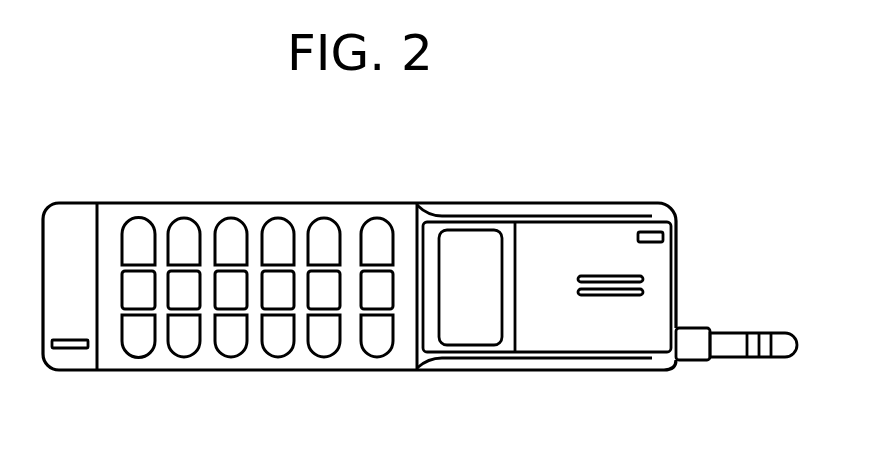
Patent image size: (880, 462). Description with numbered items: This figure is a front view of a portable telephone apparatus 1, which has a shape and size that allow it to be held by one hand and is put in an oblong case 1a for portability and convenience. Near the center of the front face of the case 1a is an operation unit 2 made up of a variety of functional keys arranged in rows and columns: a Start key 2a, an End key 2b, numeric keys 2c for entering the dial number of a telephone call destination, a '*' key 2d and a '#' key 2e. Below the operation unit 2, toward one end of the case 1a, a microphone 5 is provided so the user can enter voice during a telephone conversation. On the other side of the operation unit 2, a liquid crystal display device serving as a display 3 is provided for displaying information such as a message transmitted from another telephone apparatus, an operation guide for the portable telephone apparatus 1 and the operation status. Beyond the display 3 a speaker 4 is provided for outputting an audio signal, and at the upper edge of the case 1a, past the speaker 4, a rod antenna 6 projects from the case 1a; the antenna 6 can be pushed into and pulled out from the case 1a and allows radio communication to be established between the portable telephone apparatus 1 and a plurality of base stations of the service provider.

The portable telephone apparatus 1 is at (398, 384).
The oblong case 1a is at (250, 360).
The operation unit 2 is at (259, 284).
The Start key 2a is at (377, 218).
The End key 2b is at (367, 342).
The numeric keys 2c is at (320, 218).
The '*' key 2d is at (178, 218).
The '#' key 2e is at (186, 352).
The display 3 is at (480, 333).
The speaker 4 is at (665, 297).
The microphone 5 is at (75, 352).
The rod antenna 6 is at (725, 350).